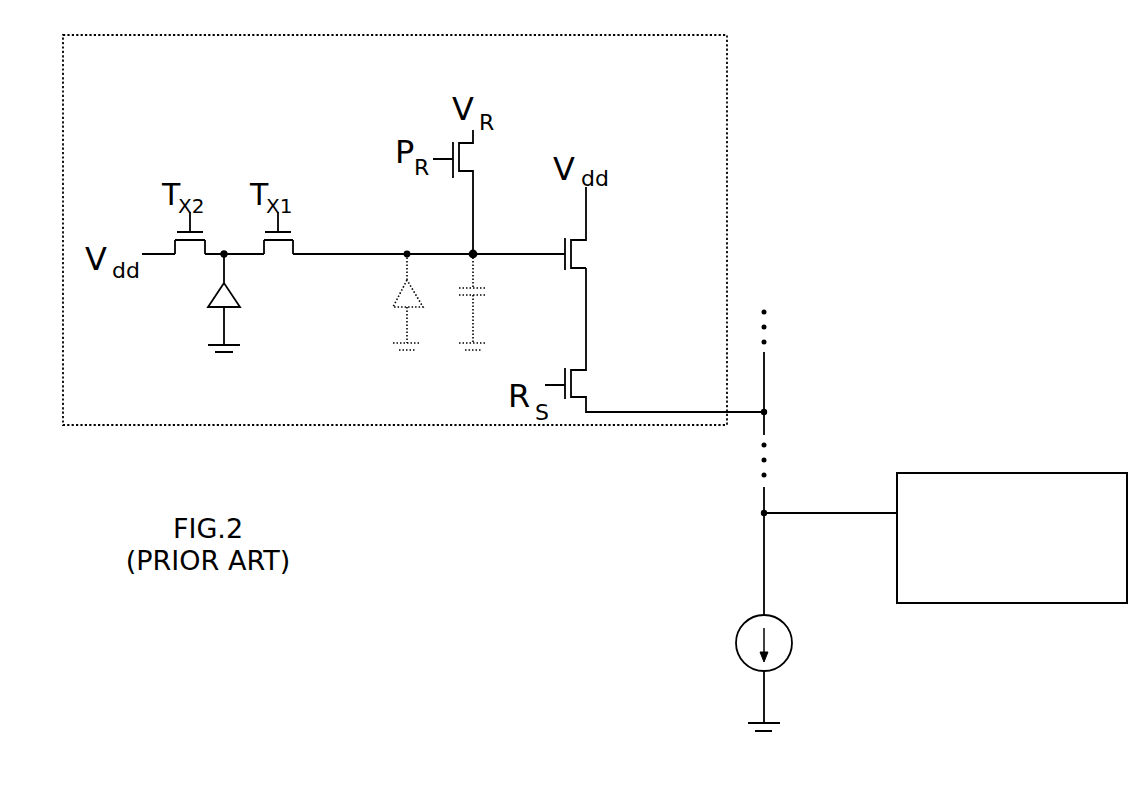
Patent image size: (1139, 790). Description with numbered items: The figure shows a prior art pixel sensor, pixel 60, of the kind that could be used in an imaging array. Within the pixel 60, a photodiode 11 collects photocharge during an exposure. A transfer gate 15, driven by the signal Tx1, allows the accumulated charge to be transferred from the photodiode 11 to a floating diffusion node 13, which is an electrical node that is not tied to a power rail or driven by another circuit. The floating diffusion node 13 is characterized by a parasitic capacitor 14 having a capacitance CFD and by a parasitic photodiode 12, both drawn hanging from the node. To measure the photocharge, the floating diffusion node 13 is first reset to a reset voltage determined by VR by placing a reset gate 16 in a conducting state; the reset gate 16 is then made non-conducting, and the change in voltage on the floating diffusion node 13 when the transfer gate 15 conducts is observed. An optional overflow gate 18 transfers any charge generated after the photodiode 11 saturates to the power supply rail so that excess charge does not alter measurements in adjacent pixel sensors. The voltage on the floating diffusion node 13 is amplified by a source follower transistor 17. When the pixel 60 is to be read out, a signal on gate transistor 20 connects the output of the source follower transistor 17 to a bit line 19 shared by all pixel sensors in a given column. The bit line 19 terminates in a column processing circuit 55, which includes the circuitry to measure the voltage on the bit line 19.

The pixel 60 is at (727, 195).
The overflow gate 18 is at (184, 249).
The photodiode 11 is at (230, 292).
The transfer gate 15 is at (287, 243).
The floating diffusion node 13 is at (330, 253).
The parasitic photodiode 12 is at (400, 302).
The parasitic capacitor 14 is at (486, 283).
The reset gate 16 is at (468, 155).
The source follower transistor 17 is at (575, 253).
The gate transistor 20 is at (575, 380).
The bit line 19 is at (764, 557).
The column processing circuit 55 is at (992, 473).